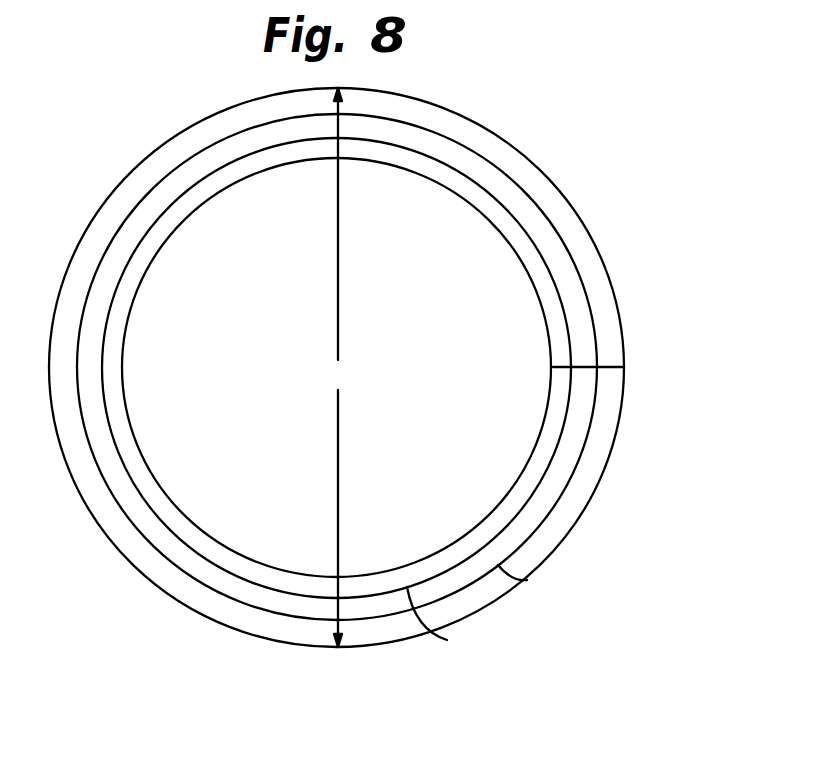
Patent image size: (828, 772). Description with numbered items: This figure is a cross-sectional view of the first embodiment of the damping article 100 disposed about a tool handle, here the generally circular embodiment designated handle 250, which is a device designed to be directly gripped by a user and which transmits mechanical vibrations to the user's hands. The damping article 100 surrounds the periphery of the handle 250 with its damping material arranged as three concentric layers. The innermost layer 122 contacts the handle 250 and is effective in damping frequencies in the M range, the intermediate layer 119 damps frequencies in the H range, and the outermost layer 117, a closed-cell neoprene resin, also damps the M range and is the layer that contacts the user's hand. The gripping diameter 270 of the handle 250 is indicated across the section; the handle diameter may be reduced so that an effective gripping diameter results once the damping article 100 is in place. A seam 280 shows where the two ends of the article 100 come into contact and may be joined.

The damping article 100 is at (581, 518).
The layer 117 is at (613, 453).
The layer 119 is at (527, 580).
The layer 122 is at (447, 640).
The handle 250 is at (506, 235).
The gripping diameter 270 is at (336, 367).
The seam 280 is at (608, 366).